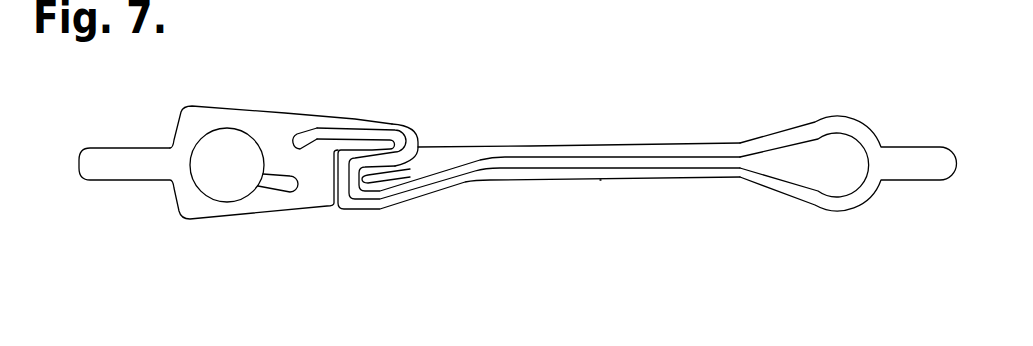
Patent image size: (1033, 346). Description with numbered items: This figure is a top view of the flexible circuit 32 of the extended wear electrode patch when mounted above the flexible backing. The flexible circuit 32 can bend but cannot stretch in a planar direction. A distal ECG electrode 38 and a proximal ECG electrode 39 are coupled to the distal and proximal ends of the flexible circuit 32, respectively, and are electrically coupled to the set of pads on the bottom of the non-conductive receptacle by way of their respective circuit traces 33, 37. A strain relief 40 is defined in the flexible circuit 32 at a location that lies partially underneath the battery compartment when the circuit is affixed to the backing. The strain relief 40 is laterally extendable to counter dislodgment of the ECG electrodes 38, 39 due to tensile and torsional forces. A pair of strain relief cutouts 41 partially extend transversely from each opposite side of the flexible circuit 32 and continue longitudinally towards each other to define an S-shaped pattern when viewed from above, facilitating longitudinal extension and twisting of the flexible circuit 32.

The flexible circuit 32 is at (623, 181).
The circuit trace 33 is at (528, 170).
The circuit trace 37 is at (275, 187).
The distal ECG electrode 38 is at (835, 164).
The proximal ECG electrode 39 is at (227, 172).
The strain relief 40 is at (420, 115).
The strain relief cutouts 41 is at (418, 135).